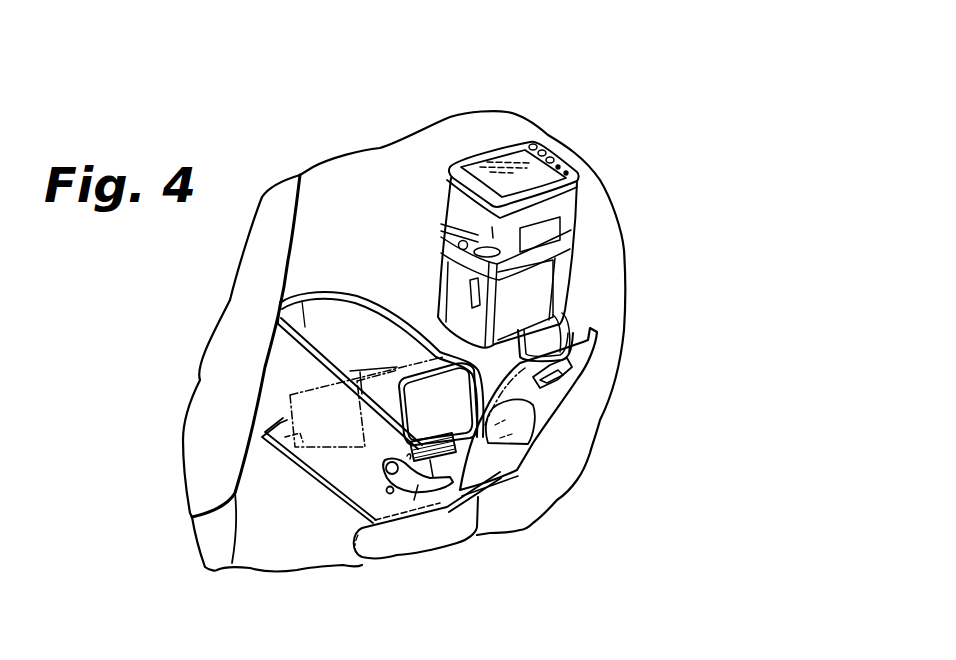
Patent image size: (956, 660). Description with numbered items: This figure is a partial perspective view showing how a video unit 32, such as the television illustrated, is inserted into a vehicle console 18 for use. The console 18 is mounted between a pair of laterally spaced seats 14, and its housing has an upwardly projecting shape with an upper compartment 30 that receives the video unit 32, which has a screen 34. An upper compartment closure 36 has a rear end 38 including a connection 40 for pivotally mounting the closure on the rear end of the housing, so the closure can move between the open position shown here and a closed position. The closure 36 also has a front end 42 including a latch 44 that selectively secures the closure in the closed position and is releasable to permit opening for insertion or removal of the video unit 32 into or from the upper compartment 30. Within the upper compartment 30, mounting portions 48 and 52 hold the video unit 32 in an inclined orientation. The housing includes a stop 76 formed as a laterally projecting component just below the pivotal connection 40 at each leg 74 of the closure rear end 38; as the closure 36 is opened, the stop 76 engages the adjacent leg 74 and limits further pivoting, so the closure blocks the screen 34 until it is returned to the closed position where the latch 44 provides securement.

The laterally spaced seats 14 is at (297, 208).
The vehicle console 18 is at (325, 262).
The upper compartment 30 is at (348, 312).
The video unit 32 is at (495, 138).
The screen 34 is at (534, 146).
The upper compartment closure 36 is at (548, 432).
The rear end 38 is at (512, 478).
The connection 40 is at (383, 470).
The front end 42 is at (582, 343).
The latch 44 is at (555, 378).
The mounting portion 48 is at (278, 445).
The mounting portion 52 is at (433, 477).
The leg 74 is at (414, 500).
The stop 76 is at (390, 494).